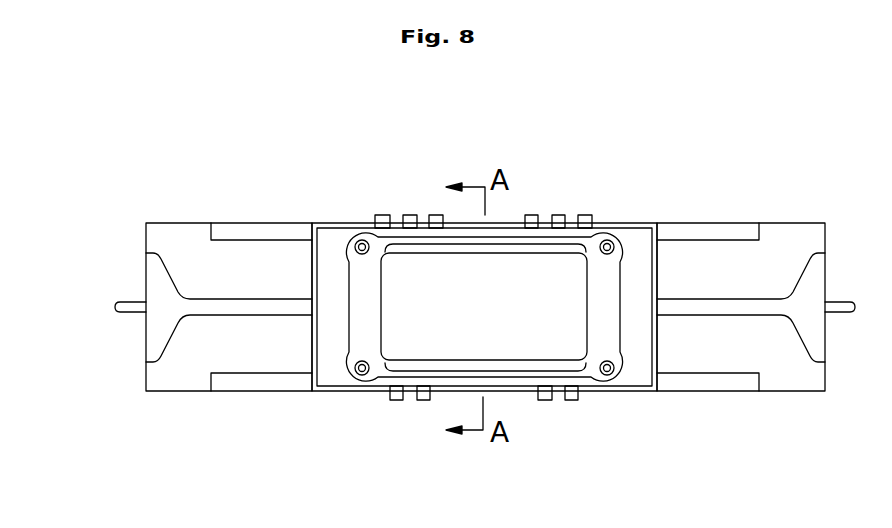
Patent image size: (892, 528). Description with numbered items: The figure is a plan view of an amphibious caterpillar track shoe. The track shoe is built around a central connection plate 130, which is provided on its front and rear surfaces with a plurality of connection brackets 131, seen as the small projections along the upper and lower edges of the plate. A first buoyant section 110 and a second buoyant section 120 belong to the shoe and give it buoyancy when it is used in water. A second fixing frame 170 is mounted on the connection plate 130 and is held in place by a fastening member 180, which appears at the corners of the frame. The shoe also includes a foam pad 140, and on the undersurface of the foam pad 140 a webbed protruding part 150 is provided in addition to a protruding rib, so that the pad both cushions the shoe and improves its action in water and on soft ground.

The first buoyant section 110 is at (775, 355).
The second buoyant section 120 is at (442, 317).
The connection plate 130 is at (333, 322).
The connection brackets 131 is at (380, 215).
The foam pad 140 is at (160, 285).
The webbed protruding part 150 is at (127, 312).
The second fixing frame 170 is at (605, 307).
The fastening member 180 is at (602, 228).